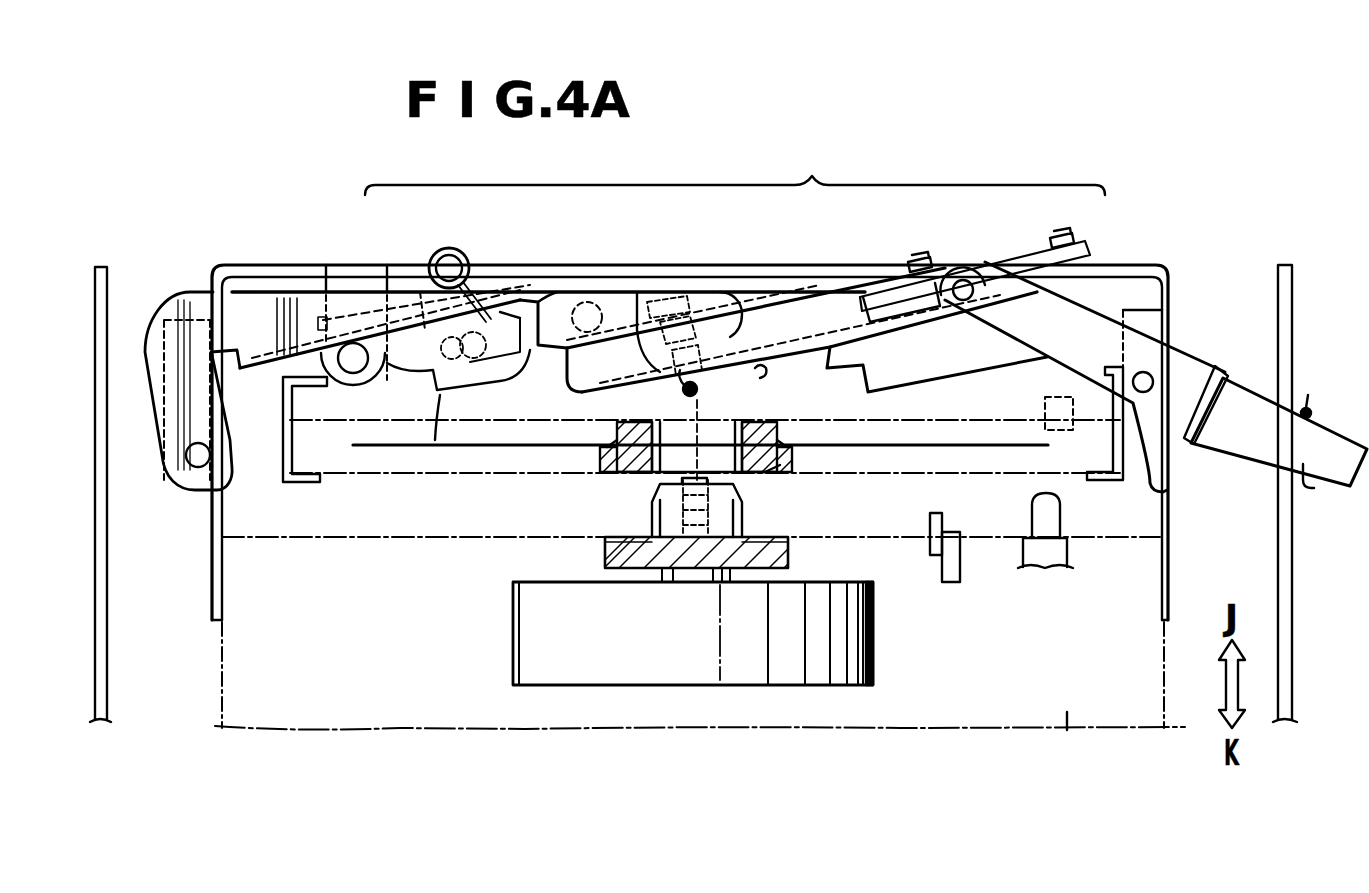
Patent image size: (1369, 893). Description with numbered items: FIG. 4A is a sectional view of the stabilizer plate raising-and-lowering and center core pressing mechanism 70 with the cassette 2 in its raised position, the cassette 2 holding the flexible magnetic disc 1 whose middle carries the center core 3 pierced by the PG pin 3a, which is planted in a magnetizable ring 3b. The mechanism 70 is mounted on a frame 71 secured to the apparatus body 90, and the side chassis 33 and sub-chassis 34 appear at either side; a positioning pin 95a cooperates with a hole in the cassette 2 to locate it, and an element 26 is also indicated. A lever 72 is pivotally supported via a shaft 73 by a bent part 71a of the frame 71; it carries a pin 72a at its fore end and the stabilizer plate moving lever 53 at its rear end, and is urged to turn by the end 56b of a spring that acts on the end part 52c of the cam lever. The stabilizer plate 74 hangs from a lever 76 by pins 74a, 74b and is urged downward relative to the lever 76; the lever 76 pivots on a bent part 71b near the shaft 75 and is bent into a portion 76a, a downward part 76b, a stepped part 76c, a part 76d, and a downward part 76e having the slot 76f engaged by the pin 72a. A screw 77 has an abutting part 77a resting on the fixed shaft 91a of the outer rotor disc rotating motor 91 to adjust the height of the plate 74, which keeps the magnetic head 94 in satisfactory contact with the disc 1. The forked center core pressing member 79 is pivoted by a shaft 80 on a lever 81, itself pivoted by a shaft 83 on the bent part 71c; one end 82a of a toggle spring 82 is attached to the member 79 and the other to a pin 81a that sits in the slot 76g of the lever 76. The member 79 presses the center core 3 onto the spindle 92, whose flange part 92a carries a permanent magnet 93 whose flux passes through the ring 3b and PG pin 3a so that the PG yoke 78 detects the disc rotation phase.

The flexible magnetic disc 1 is at (895, 447).
The cassette 2 is at (472, 472).
The center core 3 is at (598, 457).
The PG pin 3a is at (790, 434).
The ring 3b is at (790, 469).
The stopper 26 is at (1068, 432).
The side chassis 33 is at (1294, 625).
The sub-chassis 34 is at (108, 640).
The end part of lever 52c is at (1313, 490).
The stabilizer plate moving lever 53 is at (1256, 442).
The other end of spring 56b is at (1308, 398).
The stabilizer plate raising-and-lowering and center core pressing mechanism 70 is at (735, 165).
The frame 71 is at (1108, 268).
The bent part of frame 71a is at (1142, 318).
The bent part of frame 71b is at (152, 345).
The bent part of frame 71c is at (350, 280).
The lever 72 is at (1178, 423).
The pin 72a is at (962, 280).
The shaft 73 is at (1150, 375).
The stabilizer plate 74 is at (972, 365).
The pin 74a is at (918, 262).
The pin 74b is at (1060, 240).
The shaft 75 is at (195, 470).
The lever 76 is at (257, 305).
The portion of lever 76a is at (241, 373).
The part of lever 76b is at (440, 395).
The stepped part of lever 76c is at (553, 300).
The part of lever 76d is at (640, 300).
The part of lever 76e is at (605, 380).
The slot 76f is at (887, 300).
The slot 76g is at (419, 292).
The screw 77 is at (702, 300).
The abutting part 77a is at (698, 391).
The PG yoke 78 is at (770, 375).
The center core pressing member 79 is at (735, 300).
The shaft 80 is at (588, 316).
The lever 81 is at (408, 367).
The pin 81a is at (480, 362).
The toggle spring 82 is at (463, 257).
The end of toggle spring 82a is at (541, 358).
The shaft 83 is at (352, 367).
The apparatus body 90 is at (1067, 730).
The disc rotating motor 91 is at (645, 685).
The fixed shaft 91a is at (690, 524).
The spindle 92 is at (745, 522).
The flange part 92a is at (604, 557).
The permanent magnet 93 is at (628, 537).
The magnetic head 94 is at (929, 529).
The positioning pin 95a is at (1055, 559).